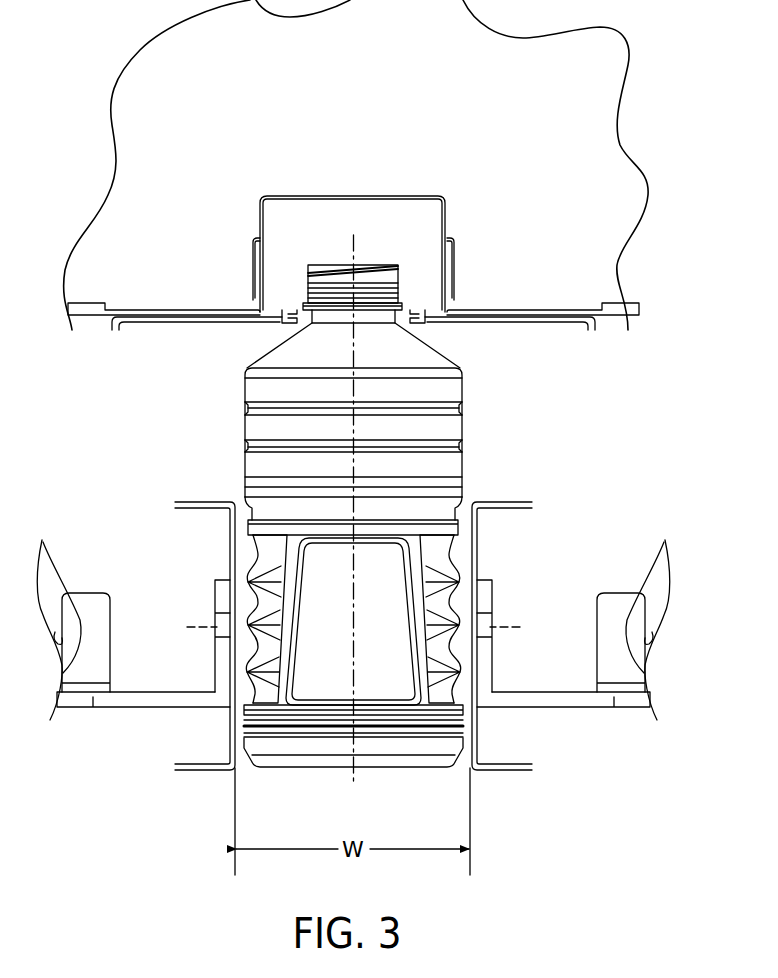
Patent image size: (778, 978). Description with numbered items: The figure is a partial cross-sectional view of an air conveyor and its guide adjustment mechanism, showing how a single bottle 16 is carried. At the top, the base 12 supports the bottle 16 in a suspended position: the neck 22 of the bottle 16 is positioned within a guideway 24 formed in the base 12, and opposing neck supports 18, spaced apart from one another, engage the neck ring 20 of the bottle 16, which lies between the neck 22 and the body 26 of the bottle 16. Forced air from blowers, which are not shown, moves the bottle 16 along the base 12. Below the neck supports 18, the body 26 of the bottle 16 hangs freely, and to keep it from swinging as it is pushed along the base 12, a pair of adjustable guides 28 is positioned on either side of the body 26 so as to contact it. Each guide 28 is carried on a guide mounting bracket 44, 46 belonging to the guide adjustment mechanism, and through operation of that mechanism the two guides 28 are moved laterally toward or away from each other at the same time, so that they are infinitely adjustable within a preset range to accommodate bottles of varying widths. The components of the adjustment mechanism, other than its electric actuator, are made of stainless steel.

The base 12 is at (343, 122).
The guideway 24 is at (302, 228).
The neck 22 is at (383, 250).
The neck ring 20 is at (405, 298).
The neck supports 18 is at (272, 336).
The bottle 16 is at (441, 428).
The body 26 is at (474, 481).
The adjustable guides 28 is at (228, 568).
The guide mounting bracket 44 is at (83, 603).
The guide mounting bracket 46 is at (133, 707).